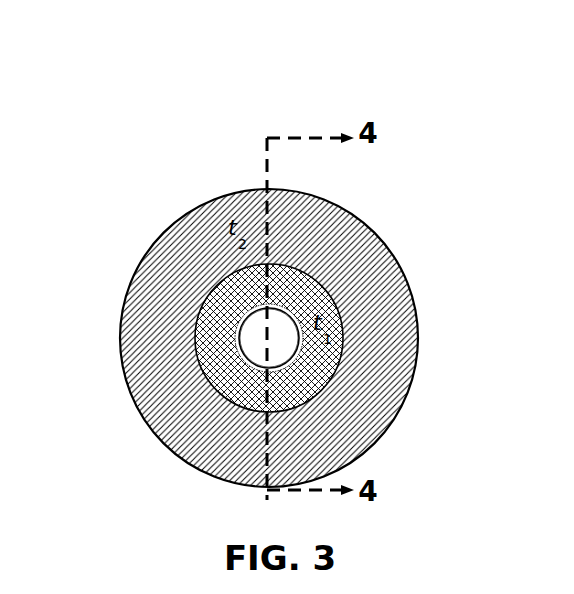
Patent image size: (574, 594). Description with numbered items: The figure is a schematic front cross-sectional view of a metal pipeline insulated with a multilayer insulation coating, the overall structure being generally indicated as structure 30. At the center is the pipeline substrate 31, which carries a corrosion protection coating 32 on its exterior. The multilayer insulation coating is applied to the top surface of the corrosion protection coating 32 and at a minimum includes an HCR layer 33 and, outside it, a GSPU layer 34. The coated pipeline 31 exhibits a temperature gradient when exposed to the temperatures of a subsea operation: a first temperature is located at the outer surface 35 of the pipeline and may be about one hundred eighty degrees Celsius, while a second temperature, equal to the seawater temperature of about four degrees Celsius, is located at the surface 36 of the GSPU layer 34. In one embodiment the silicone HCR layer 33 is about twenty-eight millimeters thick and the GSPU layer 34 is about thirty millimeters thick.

The multilayer insulated pipeline structure 30 is at (276, 249).
The pipeline substrate 31 is at (260, 346).
The corrosion protection coating 32 is at (300, 362).
The HCR layer 33 is at (240, 293).
The GSPU layer 34 is at (367, 247).
The outer surface of the pipeline 35 is at (240, 343).
The surface of the GSPU coating layer 36 is at (347, 207).